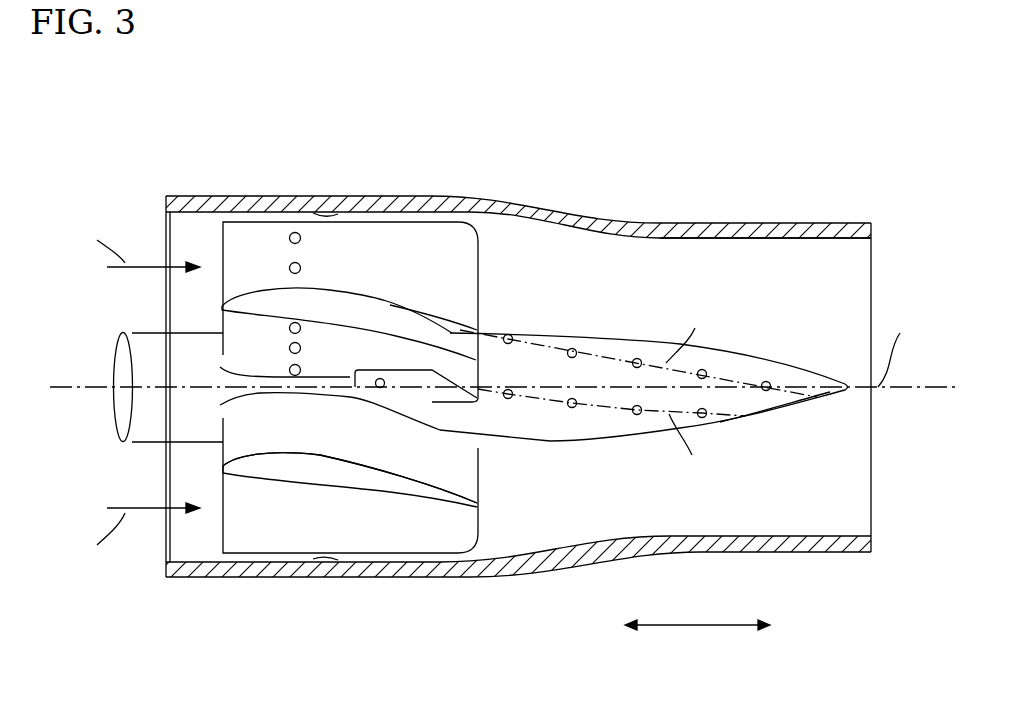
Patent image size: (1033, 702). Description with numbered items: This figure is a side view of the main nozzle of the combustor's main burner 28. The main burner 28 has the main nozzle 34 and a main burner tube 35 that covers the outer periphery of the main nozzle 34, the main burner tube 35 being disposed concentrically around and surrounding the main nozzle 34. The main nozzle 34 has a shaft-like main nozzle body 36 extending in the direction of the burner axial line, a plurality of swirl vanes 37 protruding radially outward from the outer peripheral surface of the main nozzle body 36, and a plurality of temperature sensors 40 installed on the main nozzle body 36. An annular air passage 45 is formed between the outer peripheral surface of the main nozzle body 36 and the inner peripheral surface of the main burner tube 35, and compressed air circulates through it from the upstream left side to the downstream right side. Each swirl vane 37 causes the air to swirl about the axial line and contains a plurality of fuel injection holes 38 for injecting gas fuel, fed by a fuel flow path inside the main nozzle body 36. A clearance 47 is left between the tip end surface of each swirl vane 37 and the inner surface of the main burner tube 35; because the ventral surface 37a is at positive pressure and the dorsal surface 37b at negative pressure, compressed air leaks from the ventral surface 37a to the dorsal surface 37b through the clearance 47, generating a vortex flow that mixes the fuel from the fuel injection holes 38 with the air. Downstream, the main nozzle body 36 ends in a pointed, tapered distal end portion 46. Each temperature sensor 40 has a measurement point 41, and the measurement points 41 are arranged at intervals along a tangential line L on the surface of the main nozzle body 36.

The main burner 28 is at (165, 128).
The main nozzle 34 is at (792, 349).
The main burner tube 35 is at (818, 230).
The main nozzle body 36 is at (130, 421).
The swirl vane 37 is at (372, 201).
The ventral surface 37a is at (405, 353).
The dorsal surface 37b is at (433, 470).
The fuel injection hole 38 is at (291, 265).
The temperature sensor 40 is at (638, 381).
The measurement point 41 is at (636, 359).
The air passage 45 is at (682, 257).
The distal end portion 46 is at (768, 406).
The clearance 47 is at (325, 210).